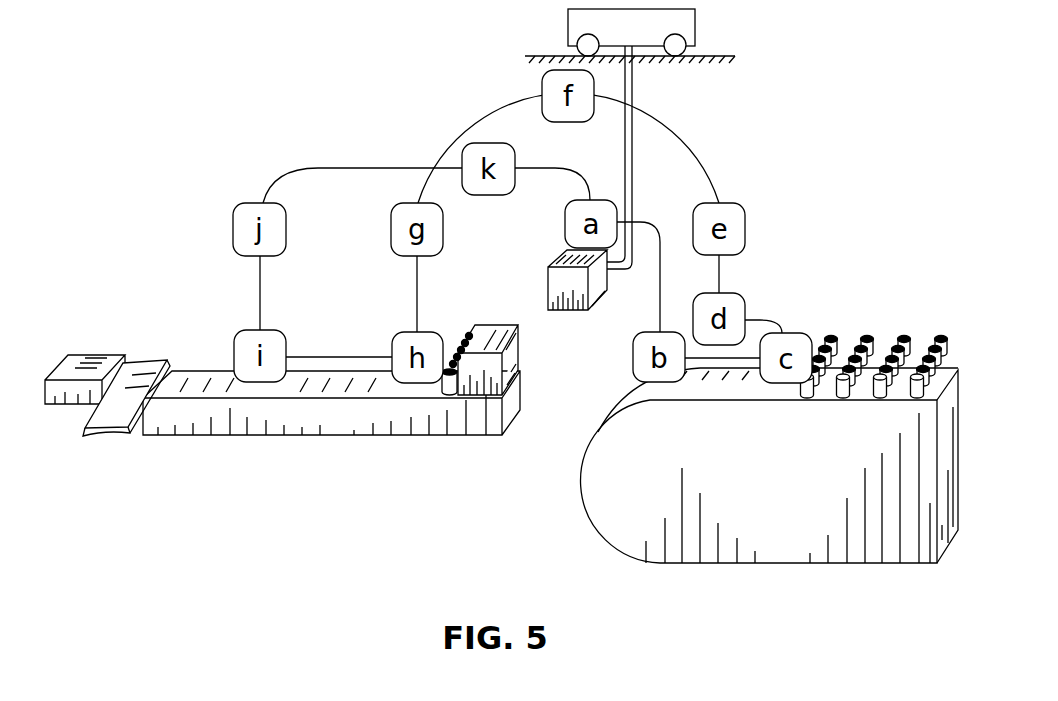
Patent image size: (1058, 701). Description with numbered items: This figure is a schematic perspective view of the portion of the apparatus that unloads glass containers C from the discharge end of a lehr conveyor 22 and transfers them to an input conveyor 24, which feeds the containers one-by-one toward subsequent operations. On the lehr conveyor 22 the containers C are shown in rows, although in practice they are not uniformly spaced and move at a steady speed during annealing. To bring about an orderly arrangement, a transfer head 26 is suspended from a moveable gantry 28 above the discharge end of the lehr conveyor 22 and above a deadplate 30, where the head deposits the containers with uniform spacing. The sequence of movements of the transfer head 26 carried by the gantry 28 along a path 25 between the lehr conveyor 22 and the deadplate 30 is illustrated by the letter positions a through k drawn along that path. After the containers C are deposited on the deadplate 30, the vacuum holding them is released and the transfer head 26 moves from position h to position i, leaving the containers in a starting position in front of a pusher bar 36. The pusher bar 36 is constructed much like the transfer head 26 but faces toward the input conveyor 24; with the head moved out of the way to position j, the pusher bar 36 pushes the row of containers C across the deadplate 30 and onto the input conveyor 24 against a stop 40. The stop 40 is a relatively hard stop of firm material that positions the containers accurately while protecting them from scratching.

The lehr conveyor 22 is at (638, 522).
The input conveyor 24 is at (150, 365).
The path 25 is at (323, 168).
The transfer head 26 is at (565, 312).
The moveable gantry 28 is at (568, 27).
The deadplate 30 is at (216, 437).
The pusher bar 36 is at (495, 325).
The stop 40 is at (78, 360).
The glass containers C is at (466, 332).